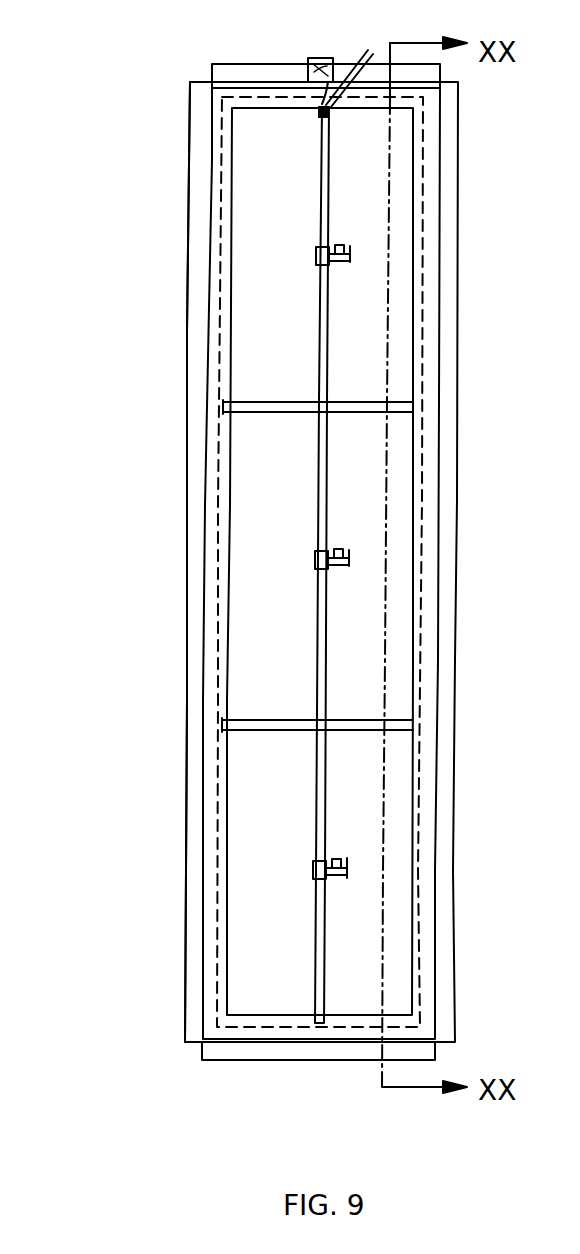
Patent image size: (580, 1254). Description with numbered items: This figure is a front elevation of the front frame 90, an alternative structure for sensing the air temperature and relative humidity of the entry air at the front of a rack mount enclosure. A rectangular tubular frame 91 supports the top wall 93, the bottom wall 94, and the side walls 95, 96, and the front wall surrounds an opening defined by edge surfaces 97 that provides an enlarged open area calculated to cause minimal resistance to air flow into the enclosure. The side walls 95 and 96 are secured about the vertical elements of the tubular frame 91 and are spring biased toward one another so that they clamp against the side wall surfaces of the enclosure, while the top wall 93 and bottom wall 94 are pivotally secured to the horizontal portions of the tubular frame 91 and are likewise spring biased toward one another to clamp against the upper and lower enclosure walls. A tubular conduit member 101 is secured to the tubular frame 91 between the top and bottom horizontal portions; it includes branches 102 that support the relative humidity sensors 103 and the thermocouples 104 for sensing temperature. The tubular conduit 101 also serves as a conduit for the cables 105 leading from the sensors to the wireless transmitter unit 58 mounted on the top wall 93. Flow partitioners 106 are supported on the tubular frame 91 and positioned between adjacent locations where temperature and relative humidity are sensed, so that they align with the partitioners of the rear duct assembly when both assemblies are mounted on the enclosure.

The front frame 90 is at (105, 325).
The rectangular tubular frame 91 is at (423, 258).
The top wall 93 is at (222, 72).
The bottom wall 94 is at (293, 1050).
The side wall 95 is at (187, 788).
The side wall 96 is at (455, 663).
The edge surfaces 97 is at (420, 492).
The wireless transmitter unit 58 is at (315, 58).
The tubular conduit member 101 is at (328, 462).
The branches 102 is at (326, 880).
The relative humidity sensors 103 is at (340, 861).
The thermocouples 104 is at (348, 872).
The cables 105 is at (366, 58).
The flow partitioners 106 is at (257, 412).